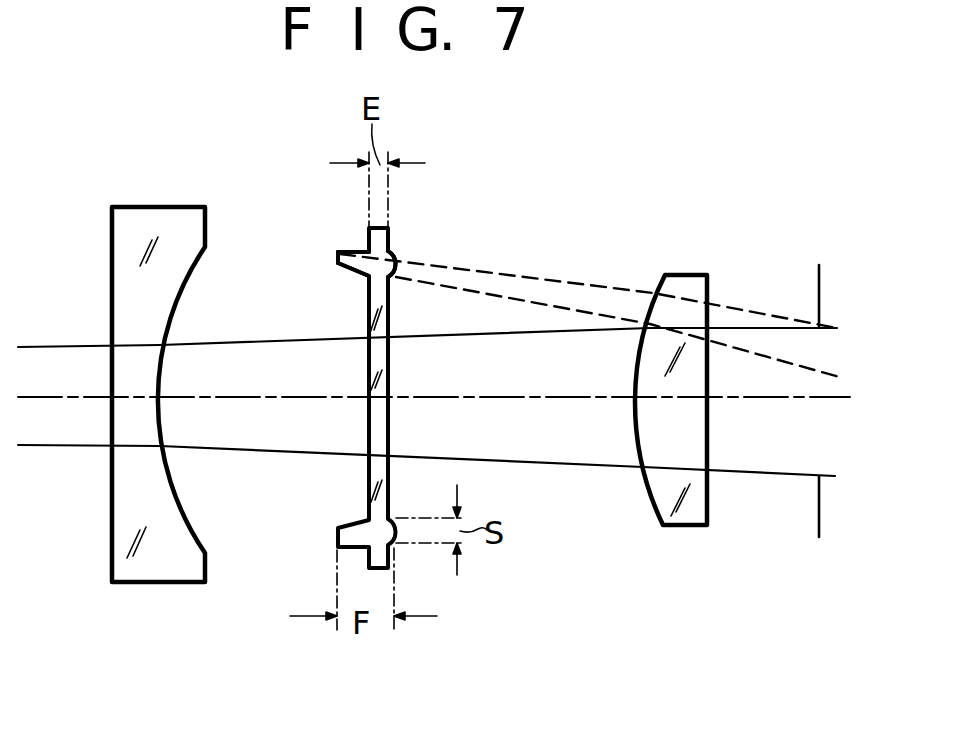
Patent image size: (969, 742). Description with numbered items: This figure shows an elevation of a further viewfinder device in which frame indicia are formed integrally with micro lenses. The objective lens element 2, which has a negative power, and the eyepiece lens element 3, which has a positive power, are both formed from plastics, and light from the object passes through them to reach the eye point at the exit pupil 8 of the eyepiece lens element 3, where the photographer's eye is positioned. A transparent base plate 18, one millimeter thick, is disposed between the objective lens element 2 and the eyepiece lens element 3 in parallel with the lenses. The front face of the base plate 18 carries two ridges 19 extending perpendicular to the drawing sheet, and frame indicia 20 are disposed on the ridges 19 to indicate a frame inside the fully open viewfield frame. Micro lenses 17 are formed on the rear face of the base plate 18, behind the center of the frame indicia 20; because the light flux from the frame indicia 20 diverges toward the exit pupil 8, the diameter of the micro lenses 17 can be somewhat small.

The objective lens element 2 is at (149, 207).
The eyepiece lens element 3 is at (685, 275).
The exit pupil 8 is at (817, 287).
The micro lenses 17 is at (399, 258).
The transparent base plate 18 is at (369, 318).
The ridges 19 is at (357, 250).
The frame indicia 20 is at (338, 258).